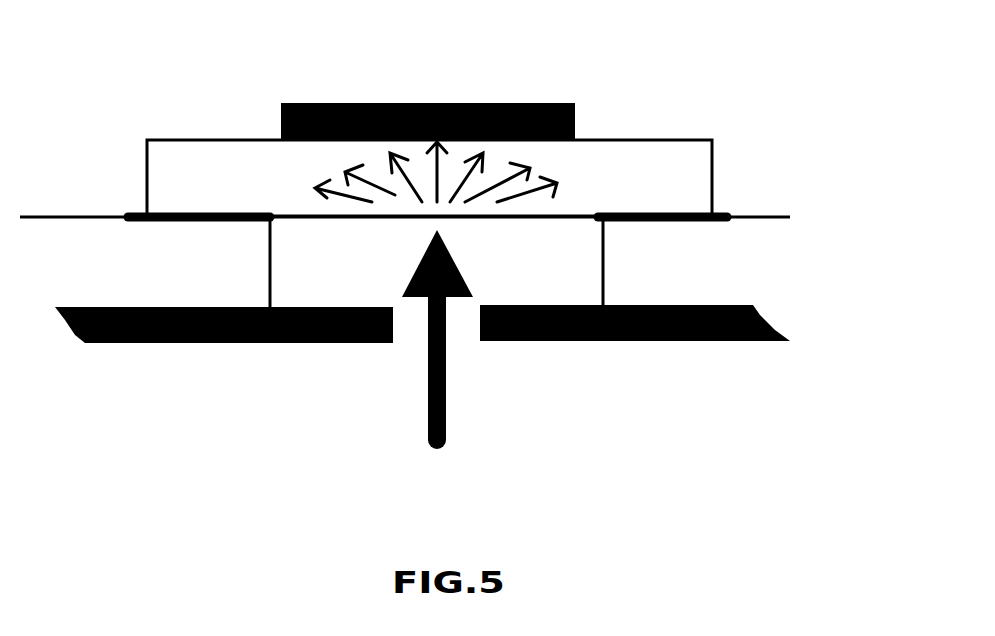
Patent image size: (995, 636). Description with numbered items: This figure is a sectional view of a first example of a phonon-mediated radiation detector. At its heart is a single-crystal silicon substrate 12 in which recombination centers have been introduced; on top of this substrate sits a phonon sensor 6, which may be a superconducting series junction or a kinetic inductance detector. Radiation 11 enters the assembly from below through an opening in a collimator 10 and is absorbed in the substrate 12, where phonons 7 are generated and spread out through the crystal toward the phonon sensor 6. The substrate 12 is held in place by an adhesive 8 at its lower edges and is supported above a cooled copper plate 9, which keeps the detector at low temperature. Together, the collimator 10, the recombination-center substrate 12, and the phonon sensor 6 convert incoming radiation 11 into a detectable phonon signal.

The phonon sensor 6 is at (560, 101).
The phonon 7 is at (310, 177).
The adhesive 8 is at (687, 213).
The cooled copper plate 9 is at (717, 282).
The collimator 10 is at (710, 338).
The radiation 11 is at (445, 387).
The single-crystal substrate in which recombination centers are introduced 12 is at (622, 170).